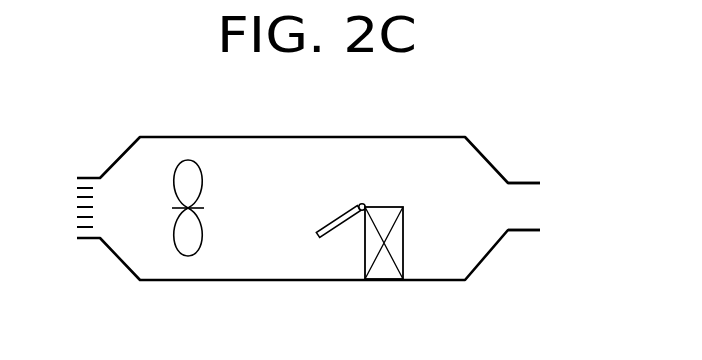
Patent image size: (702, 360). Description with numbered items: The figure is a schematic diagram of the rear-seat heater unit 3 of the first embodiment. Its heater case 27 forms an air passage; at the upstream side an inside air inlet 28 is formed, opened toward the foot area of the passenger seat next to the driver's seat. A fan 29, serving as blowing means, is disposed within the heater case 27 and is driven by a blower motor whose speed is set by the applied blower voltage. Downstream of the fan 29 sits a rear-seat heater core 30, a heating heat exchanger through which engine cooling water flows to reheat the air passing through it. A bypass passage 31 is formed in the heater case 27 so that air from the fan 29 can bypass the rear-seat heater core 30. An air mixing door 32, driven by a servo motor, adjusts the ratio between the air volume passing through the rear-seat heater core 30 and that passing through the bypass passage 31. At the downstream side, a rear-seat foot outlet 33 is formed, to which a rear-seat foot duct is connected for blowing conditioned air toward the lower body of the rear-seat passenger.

The rear-seat heater unit 3 is at (325, 205).
The heater case 27 is at (300, 137).
The inside air inlet 28 is at (72, 212).
The fan 29 is at (197, 175).
The rear-seat heater core 30 is at (403, 258).
The bypass passage 31 is at (383, 157).
The air mixing door 32 is at (330, 238).
The rear-seat foot outlet 33 is at (540, 212).